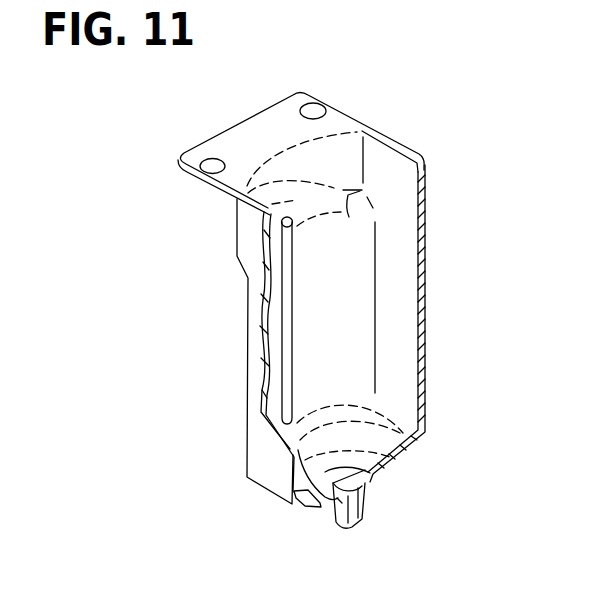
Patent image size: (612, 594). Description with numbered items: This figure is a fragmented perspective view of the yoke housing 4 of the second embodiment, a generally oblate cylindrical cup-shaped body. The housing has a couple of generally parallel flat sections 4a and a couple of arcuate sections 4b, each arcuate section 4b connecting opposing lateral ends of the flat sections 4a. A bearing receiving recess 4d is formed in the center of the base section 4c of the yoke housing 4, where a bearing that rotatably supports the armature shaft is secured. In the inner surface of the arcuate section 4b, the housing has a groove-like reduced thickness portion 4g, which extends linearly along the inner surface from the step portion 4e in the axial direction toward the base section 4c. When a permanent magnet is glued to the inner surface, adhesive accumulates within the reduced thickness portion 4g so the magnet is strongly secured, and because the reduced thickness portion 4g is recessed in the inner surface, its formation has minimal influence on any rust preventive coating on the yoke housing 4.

The yoke housing 4 is at (397, 142).
The flat section 4a is at (422, 347).
The arcuate section 4b is at (345, 340).
The base section 4c is at (299, 510).
The bearing receiving recess 4d is at (372, 478).
The step portion 4e is at (350, 216).
The reduced thickness portion 4g is at (292, 228).